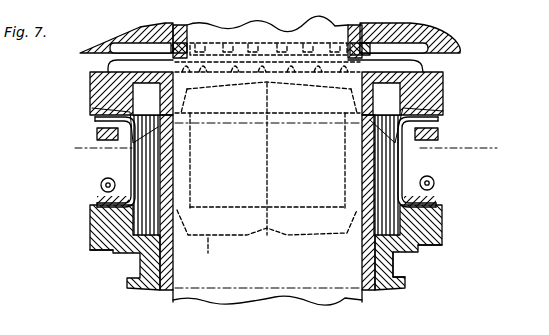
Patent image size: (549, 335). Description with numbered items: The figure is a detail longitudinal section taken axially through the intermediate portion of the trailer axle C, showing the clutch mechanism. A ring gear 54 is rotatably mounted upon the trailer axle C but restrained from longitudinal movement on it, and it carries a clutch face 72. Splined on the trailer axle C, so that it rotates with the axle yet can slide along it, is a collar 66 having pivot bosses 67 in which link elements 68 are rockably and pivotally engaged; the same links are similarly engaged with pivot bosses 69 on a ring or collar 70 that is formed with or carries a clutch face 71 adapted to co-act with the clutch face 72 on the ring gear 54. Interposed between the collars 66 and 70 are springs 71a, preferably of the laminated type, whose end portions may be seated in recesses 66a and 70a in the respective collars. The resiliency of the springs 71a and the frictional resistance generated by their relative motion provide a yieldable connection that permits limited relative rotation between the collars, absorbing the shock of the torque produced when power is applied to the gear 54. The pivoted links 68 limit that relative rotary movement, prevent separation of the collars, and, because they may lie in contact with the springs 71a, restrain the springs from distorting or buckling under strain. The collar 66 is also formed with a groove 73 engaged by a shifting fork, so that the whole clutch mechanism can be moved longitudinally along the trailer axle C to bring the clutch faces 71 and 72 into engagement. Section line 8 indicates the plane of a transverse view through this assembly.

The ring gear 54 is at (445, 38).
The clutch face 72 is at (321, 42).
The clutch face 71 is at (266, 60).
The ring or collar 70 is at (445, 97).
The recess 70a is at (457, 113).
The spring 71a is at (178, 165).
The pivot boss 69 is at (97, 133).
The section line 8 is at (282, 150).
The link element 68 is at (125, 163).
The pivot boss 67 is at (97, 185).
The collar 66 is at (442, 215).
The recess 66a is at (458, 235).
The groove 73 is at (393, 263).
The trailer axle C is at (362, 305).